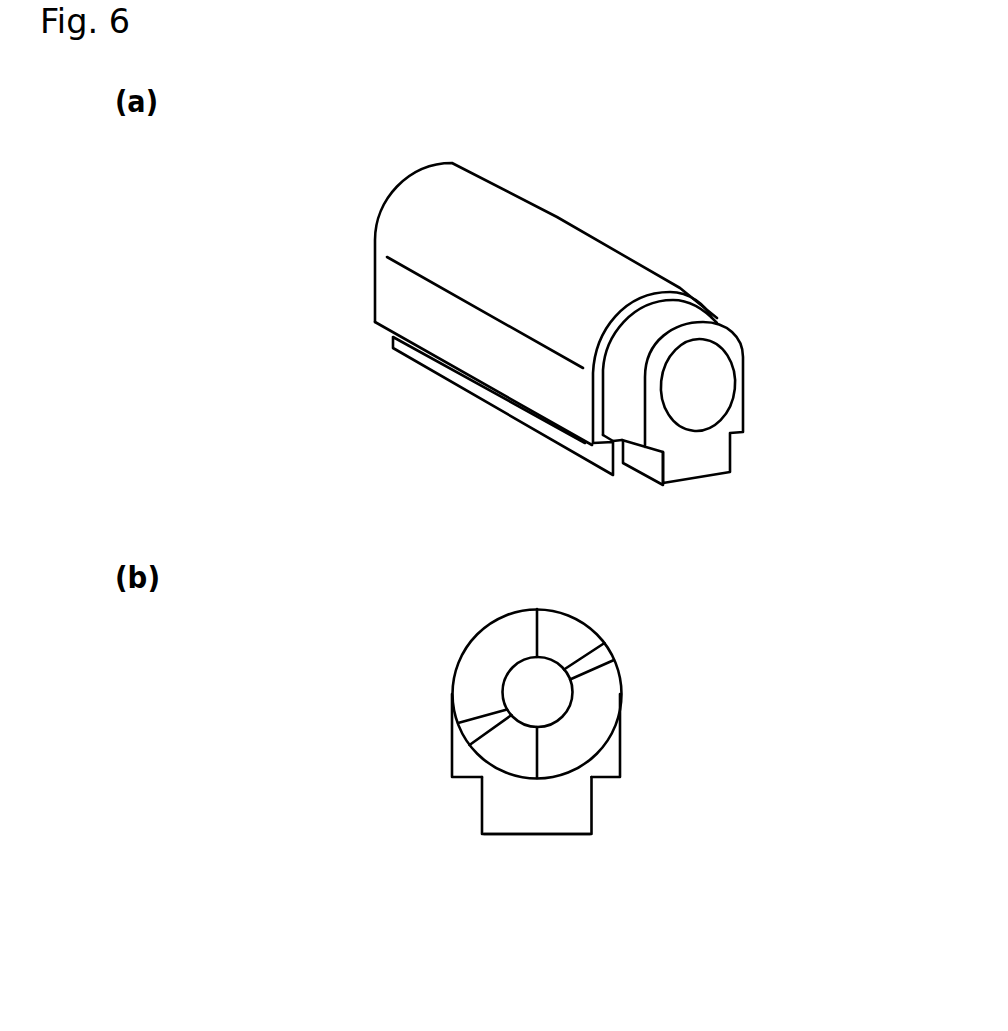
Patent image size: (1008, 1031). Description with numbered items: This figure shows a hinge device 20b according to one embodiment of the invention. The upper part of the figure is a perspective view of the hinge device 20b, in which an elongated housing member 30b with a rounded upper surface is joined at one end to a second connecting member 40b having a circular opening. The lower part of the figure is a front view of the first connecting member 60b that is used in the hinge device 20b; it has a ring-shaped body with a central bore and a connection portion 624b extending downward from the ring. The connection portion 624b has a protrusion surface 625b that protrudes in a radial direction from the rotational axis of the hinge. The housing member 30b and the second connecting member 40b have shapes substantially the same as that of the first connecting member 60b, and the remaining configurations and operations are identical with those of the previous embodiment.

The hinge device 20b is at (625, 302).
The housing member 30b is at (557, 217).
The second connecting member 40b is at (743, 387).
The first connecting member 60b is at (573, 743).
The connection portion 624b is at (482, 818).
The protrusion surface 625b is at (572, 837).